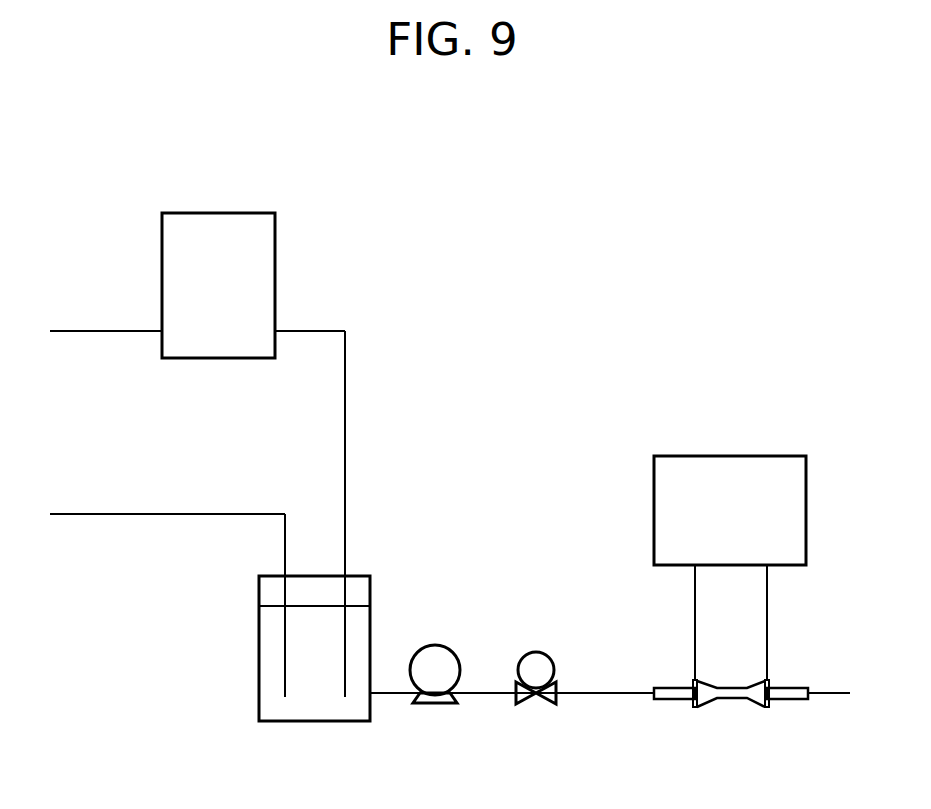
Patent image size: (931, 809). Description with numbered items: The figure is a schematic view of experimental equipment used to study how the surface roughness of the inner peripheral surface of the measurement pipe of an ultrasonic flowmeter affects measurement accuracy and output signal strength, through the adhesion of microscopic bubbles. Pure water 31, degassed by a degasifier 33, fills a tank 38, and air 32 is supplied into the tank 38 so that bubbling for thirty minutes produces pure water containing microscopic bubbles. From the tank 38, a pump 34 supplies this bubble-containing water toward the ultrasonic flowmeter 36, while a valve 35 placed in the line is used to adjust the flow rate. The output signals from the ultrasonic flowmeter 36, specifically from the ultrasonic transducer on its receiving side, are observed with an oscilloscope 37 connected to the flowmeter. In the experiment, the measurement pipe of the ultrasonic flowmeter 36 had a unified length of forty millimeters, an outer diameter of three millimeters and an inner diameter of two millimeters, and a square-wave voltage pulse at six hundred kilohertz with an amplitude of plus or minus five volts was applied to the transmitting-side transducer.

The pure water 31 is at (109, 332).
The air 32 is at (117, 515).
The degasifier 33 is at (228, 232).
The pump 34 is at (438, 655).
The valve 35 is at (538, 665).
The ultrasonic flowmeter 36 is at (728, 697).
The oscilloscope 37 is at (745, 478).
The tank 38 is at (272, 683).